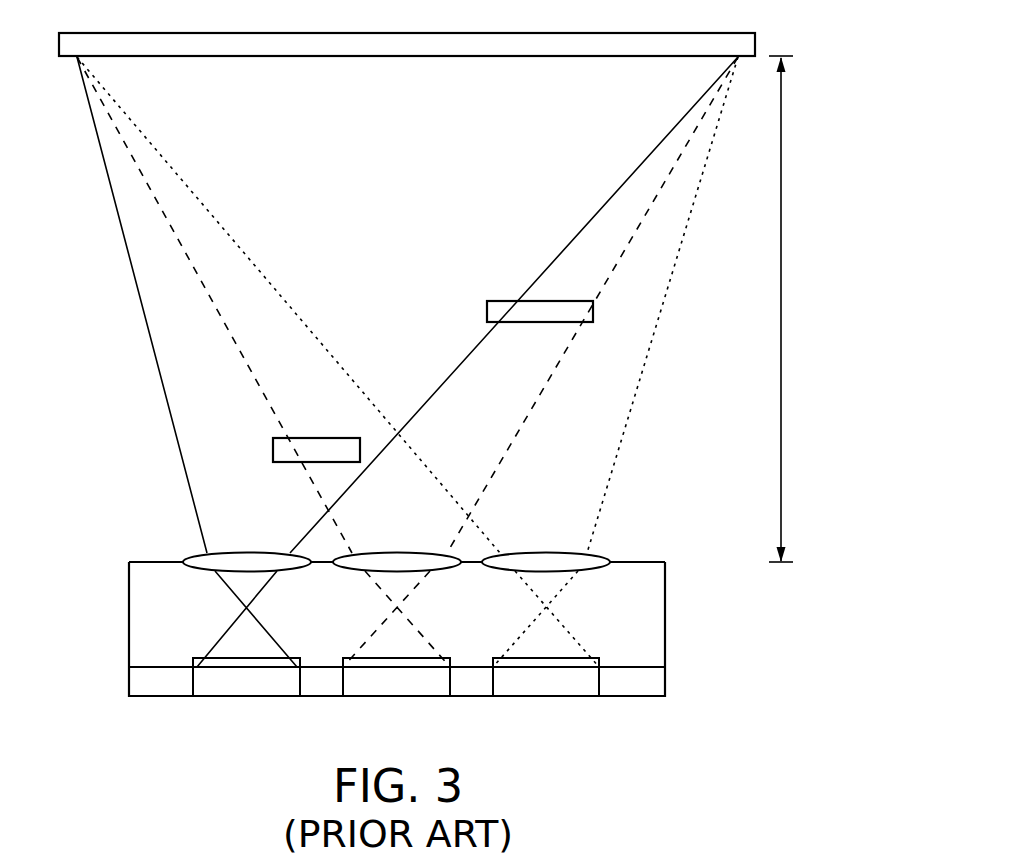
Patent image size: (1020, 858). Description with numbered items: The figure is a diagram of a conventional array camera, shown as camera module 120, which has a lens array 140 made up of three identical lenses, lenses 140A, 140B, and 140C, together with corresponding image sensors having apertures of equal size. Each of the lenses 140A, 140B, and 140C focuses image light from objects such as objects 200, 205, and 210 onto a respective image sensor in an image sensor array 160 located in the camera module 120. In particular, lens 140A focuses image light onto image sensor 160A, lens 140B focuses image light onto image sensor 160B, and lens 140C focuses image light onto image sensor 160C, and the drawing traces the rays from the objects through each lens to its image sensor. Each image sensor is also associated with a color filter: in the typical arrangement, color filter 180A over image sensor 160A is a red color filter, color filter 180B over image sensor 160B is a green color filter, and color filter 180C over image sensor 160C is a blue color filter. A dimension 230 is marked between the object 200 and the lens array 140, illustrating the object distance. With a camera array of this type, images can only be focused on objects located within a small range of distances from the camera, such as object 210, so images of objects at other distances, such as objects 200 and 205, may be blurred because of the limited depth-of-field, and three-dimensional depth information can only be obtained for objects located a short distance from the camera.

The object 200 is at (648, 39).
The distance between light source and lens array 230 is at (782, 308).
The object 210 is at (548, 307).
The object 205 is at (318, 447).
The lens array 140 is at (106, 561).
The lens 140A is at (248, 555).
The lens 140B is at (405, 555).
The lens 140C is at (546, 555).
The camera module 120 is at (653, 602).
The image sensor array 160 is at (653, 683).
The image sensor 160A is at (243, 683).
The image sensor 160B is at (392, 683).
The image sensor 160C is at (540, 683).
The color filter 180A is at (247, 663).
The color filter 180B is at (396, 663).
The color filter 180C is at (541, 663).